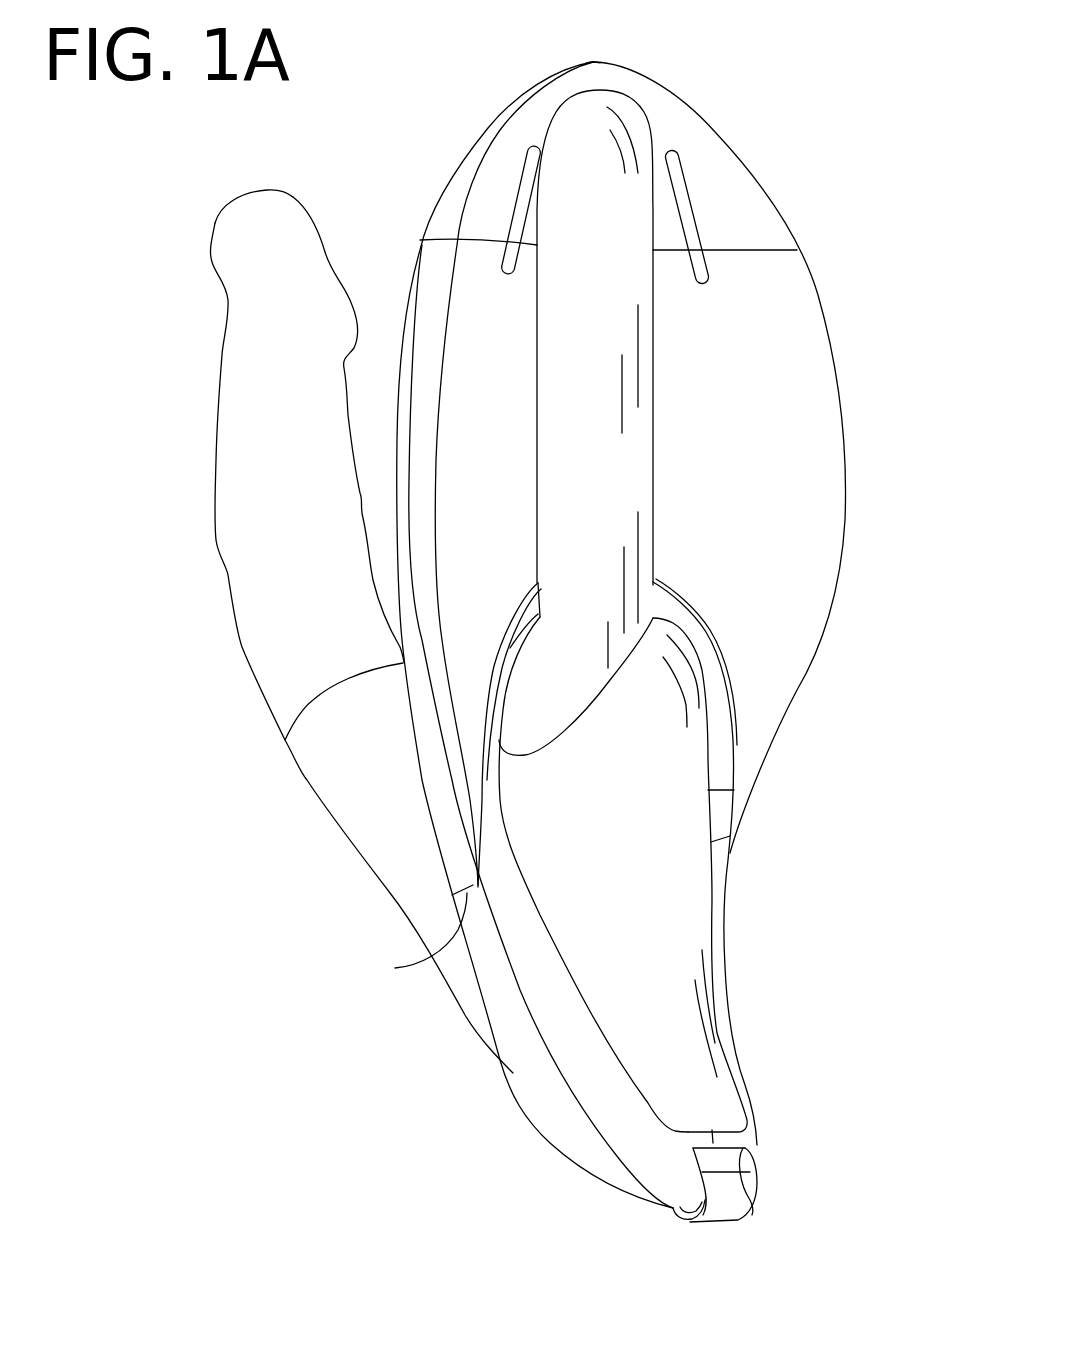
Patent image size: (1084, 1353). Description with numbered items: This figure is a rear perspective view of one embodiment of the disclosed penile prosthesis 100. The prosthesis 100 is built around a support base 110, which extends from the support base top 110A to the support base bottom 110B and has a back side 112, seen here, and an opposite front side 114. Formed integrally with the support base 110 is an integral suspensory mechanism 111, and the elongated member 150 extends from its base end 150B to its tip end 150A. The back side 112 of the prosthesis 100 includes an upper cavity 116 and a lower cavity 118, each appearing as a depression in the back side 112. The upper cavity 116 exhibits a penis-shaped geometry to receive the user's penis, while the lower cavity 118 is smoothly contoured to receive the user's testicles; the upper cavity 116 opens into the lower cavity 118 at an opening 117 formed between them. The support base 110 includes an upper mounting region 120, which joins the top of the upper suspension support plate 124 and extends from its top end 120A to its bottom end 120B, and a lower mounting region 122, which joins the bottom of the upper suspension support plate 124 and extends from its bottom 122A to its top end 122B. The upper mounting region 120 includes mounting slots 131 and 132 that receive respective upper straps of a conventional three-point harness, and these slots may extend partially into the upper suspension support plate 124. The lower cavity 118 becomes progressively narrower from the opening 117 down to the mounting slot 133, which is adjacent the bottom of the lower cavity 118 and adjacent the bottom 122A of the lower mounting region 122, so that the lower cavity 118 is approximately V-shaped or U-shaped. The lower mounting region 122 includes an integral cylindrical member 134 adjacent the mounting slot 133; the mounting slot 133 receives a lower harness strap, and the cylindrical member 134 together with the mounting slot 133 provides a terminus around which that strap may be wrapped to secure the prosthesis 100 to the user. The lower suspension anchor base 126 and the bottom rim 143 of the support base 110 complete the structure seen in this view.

The penile prosthesis 100 is at (962, 61).
The support base 110 is at (723, 170).
The support base top 110A is at (594, 62).
The support base bottom 110B is at (667, 1207).
The integral suspensory mechanism 111 is at (418, 405).
The back side of prosthesis 112 is at (800, 355).
The front side of prosthesis 114 is at (433, 197).
The upper cavity 116 is at (600, 463).
The opening of upper cavity 117 is at (550, 690).
The lower cavity 118 is at (640, 923).
The upper mounting region 120 is at (767, 205).
The top end of upper mounting region 120A is at (601, 62).
The bottom end of upper mounting region 120B is at (772, 250).
The lower mounting region 122 is at (540, 1095).
The bottom of lower mounting region 122A is at (667, 1207).
The top end of lower mounting region 122B is at (395, 968).
The upper suspension support plate 124 is at (827, 542).
The lower suspension anchor base 126 is at (375, 787).
The mounting slot 131 is at (688, 187).
The mounting slot 132 is at (520, 183).
The mounting slot 133 is at (733, 1160).
The integral cylindrical member 134 is at (736, 1197).
The bottom rim 143 is at (713, 1137).
The elongated member 150 is at (240, 396).
The tip end of elongated member 150A is at (250, 220).
The base end of elongated member 150B is at (338, 684).